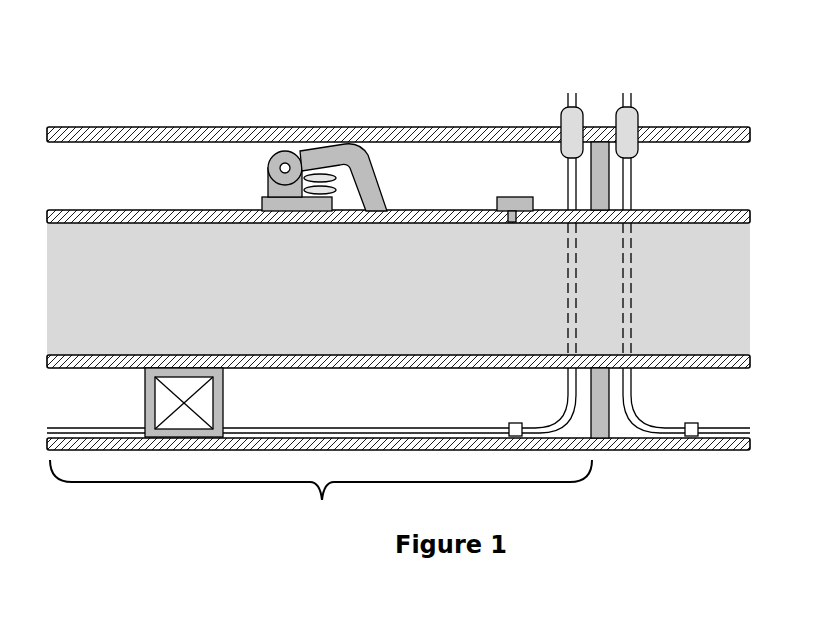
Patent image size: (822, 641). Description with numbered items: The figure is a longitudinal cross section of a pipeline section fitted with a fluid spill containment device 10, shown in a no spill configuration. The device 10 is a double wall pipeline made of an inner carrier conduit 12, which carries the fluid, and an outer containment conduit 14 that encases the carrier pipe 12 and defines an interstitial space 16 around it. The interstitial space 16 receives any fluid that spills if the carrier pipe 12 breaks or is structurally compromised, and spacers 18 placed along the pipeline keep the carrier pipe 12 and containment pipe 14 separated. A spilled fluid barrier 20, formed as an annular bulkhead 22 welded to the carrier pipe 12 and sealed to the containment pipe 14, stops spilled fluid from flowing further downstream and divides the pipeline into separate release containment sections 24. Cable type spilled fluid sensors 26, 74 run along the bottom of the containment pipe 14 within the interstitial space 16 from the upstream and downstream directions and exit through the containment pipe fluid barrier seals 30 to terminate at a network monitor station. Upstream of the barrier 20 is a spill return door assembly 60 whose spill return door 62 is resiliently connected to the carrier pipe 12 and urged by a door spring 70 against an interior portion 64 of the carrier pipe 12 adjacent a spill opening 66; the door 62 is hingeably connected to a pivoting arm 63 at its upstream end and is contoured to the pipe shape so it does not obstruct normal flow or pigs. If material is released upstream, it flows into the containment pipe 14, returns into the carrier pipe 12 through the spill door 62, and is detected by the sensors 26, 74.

The fluid spill containment device 10 is at (350, 47).
The inner carrier conduit 12 is at (233, 223).
The outer containment conduit 14 is at (200, 127).
The interstitial space 16 is at (150, 183).
The spacer 18 is at (225, 403).
The spilled fluid barrier 20 is at (610, 172).
The annular bulkhead 22 is at (610, 398).
The release containment section 24 is at (321, 496).
The spilled fluid sensor 26 is at (632, 98).
The containment pipe fluid barrier seal 30 is at (560, 118).
The spill return door assembly 60 is at (368, 300).
The spill return door 62 is at (462, 223).
The pivoting arm 63 is at (387, 202).
The interior portion 64 is at (510, 222).
The spill opening 66 is at (422, 250).
The door spring 70 is at (338, 182).
The spilled fluid sensor 74 is at (570, 90).